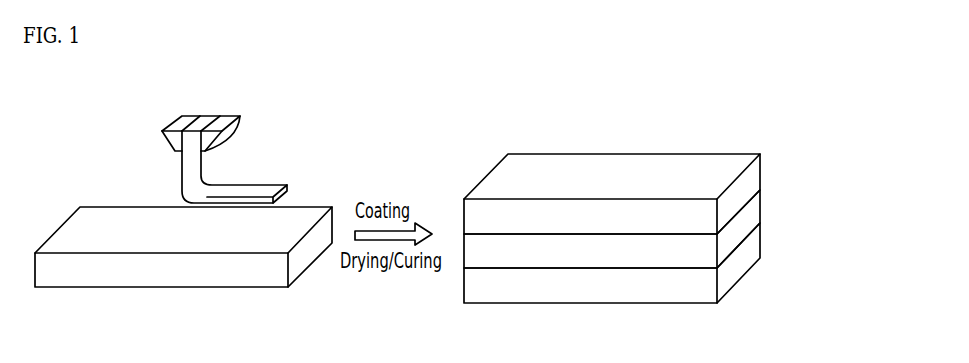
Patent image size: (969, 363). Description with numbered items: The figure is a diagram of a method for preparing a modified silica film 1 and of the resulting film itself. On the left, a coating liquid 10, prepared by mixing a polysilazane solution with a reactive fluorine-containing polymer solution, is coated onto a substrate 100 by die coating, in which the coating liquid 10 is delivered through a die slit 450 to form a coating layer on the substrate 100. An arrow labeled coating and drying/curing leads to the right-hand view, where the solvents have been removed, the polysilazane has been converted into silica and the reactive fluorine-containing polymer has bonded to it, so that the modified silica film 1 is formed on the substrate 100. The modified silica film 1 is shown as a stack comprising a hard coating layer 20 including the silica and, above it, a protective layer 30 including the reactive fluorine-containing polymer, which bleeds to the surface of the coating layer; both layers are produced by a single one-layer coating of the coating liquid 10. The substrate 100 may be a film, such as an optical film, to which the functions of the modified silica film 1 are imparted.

The die slit 450 is at (233, 128).
The coating liquid 10 is at (210, 172).
The substrate 100 is at (233, 277).
The protective layer 30 is at (758, 174).
The hard coating layer 20 is at (637, 229).
The modified silica film 1 is at (648, 211).